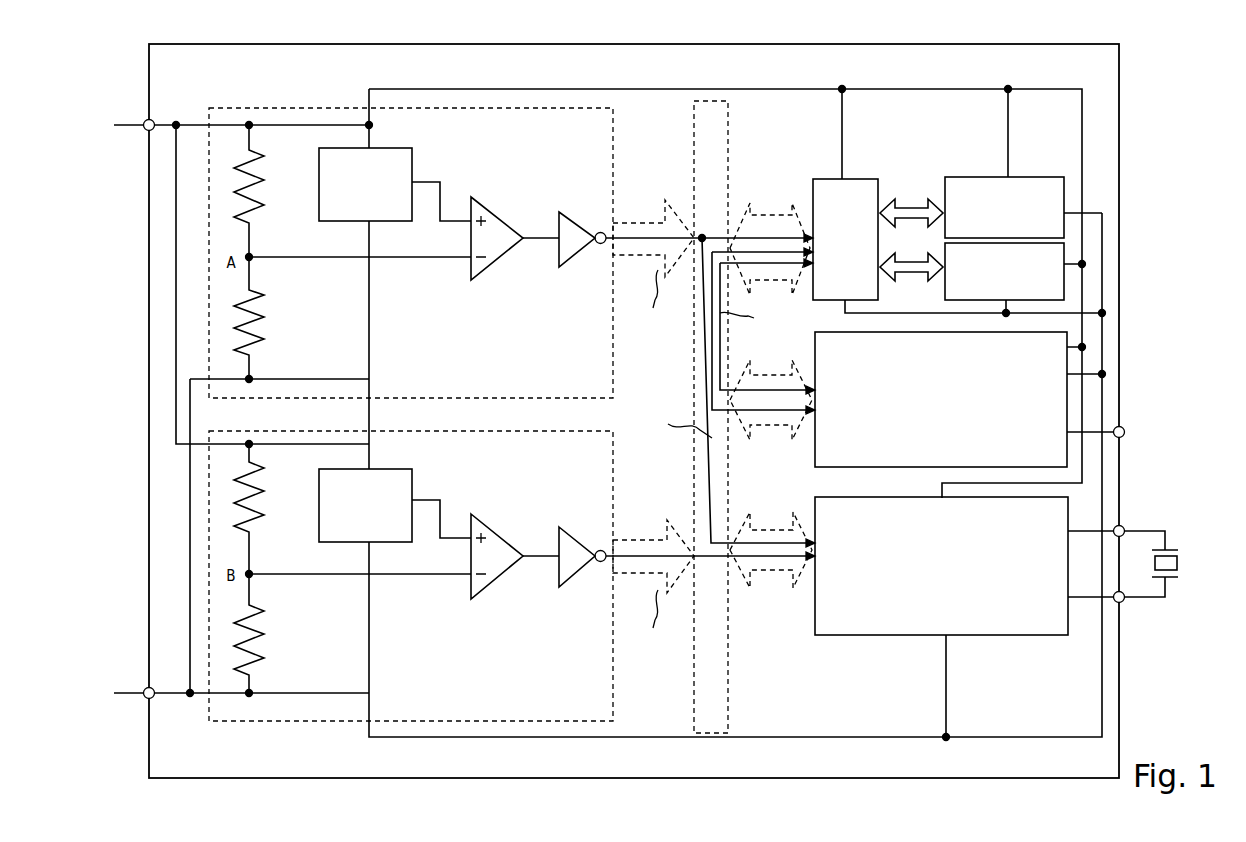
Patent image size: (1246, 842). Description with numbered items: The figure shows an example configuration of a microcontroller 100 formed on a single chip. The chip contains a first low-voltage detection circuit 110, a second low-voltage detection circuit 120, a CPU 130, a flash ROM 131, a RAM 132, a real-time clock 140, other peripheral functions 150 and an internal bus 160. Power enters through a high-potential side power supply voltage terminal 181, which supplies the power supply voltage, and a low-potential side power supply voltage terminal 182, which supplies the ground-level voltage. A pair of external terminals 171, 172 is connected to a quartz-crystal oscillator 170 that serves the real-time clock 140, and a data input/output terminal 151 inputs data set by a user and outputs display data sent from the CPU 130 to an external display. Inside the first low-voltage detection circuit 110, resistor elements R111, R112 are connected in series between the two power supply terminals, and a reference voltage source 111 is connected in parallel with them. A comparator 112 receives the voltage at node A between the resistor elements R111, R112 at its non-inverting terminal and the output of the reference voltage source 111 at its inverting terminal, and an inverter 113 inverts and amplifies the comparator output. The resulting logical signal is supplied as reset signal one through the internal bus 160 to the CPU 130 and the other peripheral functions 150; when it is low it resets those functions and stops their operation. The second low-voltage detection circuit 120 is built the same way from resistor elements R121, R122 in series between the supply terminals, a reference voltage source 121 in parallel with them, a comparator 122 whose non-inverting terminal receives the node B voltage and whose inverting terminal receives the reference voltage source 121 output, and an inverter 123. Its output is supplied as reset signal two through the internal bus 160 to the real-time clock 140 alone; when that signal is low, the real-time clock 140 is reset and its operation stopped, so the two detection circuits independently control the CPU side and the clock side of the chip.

The microcontroller 100 is at (364, 44).
The low-voltage detection circuit 110 is at (258, 108).
The reference voltage source 111 is at (412, 160).
The comparator 112 is at (493, 197).
The inverter 113 is at (566, 212).
The low-voltage detection circuit 120 is at (318, 722).
The reference voltage source 121 is at (412, 475).
The comparator 122 is at (492, 599).
The inverter 123 is at (570, 585).
The CPU 130 is at (848, 179).
The flash ROM 131 is at (978, 177).
The RAM 132 is at (1065, 283).
The real-time clock 140 is at (850, 635).
The other peripheral functions 150 is at (812, 452).
The data input/output terminal 151 is at (1124, 428).
The internal bus 160 is at (730, 703).
The quartz-crystal oscillator 170 is at (1178, 560).
The external terminal 171 is at (1124, 525).
The external terminal 172 is at (1124, 603).
The high-potential side power supply voltage terminal 181 is at (149, 119).
The low-potential side power supply voltage terminal 182 is at (149, 699).
The resistor element R111 is at (272, 191).
The resistor element R112 is at (272, 318).
The resistor element R121 is at (272, 509).
The resistor element R122 is at (272, 633).